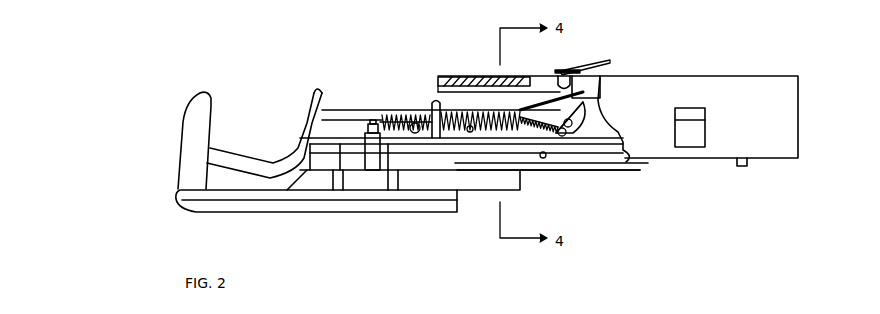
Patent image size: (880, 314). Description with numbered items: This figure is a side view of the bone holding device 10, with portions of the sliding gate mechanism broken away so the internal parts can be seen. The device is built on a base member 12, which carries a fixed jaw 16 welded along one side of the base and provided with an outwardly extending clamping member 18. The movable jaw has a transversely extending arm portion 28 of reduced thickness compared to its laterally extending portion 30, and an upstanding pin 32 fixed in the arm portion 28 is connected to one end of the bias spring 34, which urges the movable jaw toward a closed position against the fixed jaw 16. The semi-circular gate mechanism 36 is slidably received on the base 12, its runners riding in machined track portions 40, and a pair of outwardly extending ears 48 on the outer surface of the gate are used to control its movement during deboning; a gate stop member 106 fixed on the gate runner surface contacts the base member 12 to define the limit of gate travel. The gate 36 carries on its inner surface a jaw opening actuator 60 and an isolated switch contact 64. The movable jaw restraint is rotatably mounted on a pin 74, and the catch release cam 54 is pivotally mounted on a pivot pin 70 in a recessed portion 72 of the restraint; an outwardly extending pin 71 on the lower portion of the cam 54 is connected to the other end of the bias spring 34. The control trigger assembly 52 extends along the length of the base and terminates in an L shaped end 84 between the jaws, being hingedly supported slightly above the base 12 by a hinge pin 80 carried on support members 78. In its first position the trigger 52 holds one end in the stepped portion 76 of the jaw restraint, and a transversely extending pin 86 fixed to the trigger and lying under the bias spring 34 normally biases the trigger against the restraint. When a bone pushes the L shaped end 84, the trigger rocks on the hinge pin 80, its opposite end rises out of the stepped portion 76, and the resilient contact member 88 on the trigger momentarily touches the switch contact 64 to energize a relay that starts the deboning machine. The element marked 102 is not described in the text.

The bone holding device 10 is at (143, 124).
The base member 12 is at (641, 163).
The fixed jaw 16 is at (244, 196).
The clamping member 18 is at (198, 118).
The arm portion 28 is at (365, 182).
The laterally extending portion 30 is at (476, 182).
The upstanding pin 32 is at (369, 120).
The bias spring 34 is at (395, 116).
The gate mechanism 36 is at (738, 82).
The track portions 40 is at (604, 156).
The ears 48 is at (702, 131).
The control trigger assembly 52 is at (340, 112).
The catch release cam 54 is at (595, 108).
The jaw opening actuator 60 is at (600, 91).
The switch contact 64 is at (572, 70).
The pivot pin 70 is at (573, 125).
The pin 71 is at (585, 140).
The recessed portion 72 is at (524, 108).
The pin 74 is at (553, 130).
The stepped portion 76 is at (512, 130).
The support members 78 is at (406, 118).
The hinge pin 80 is at (417, 133).
The L shaped end 84 is at (232, 154).
The transversely extending pin 86 is at (471, 112).
The resilient contact member 88 is at (553, 94).
The post 102 is at (438, 101).
The gate stop member 106 is at (748, 166).